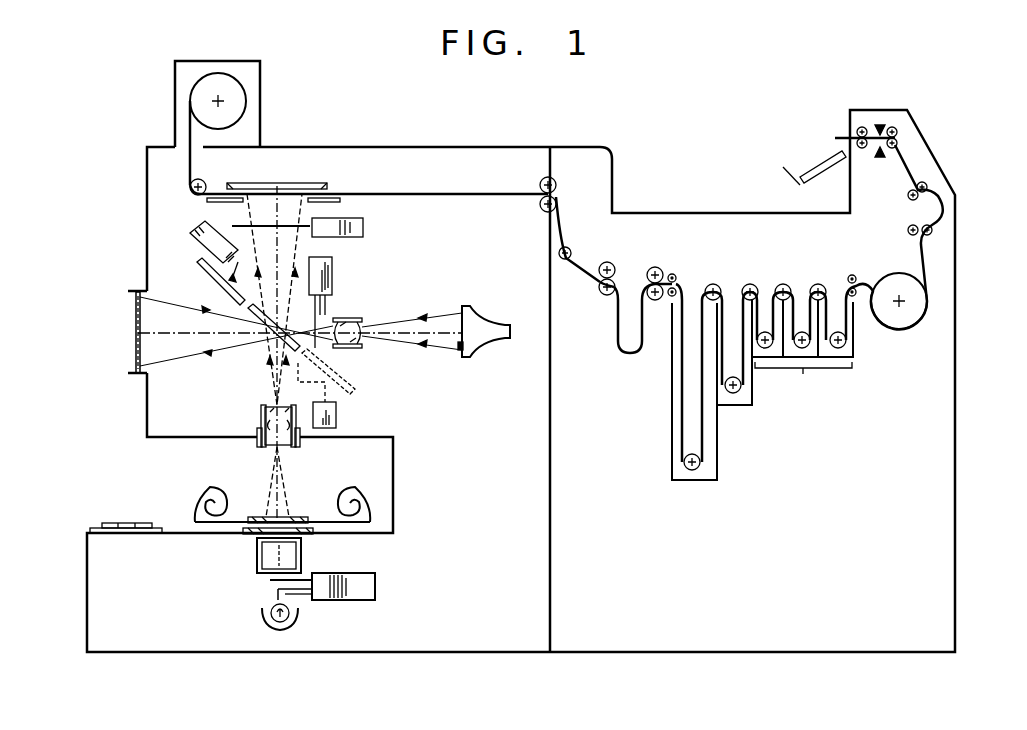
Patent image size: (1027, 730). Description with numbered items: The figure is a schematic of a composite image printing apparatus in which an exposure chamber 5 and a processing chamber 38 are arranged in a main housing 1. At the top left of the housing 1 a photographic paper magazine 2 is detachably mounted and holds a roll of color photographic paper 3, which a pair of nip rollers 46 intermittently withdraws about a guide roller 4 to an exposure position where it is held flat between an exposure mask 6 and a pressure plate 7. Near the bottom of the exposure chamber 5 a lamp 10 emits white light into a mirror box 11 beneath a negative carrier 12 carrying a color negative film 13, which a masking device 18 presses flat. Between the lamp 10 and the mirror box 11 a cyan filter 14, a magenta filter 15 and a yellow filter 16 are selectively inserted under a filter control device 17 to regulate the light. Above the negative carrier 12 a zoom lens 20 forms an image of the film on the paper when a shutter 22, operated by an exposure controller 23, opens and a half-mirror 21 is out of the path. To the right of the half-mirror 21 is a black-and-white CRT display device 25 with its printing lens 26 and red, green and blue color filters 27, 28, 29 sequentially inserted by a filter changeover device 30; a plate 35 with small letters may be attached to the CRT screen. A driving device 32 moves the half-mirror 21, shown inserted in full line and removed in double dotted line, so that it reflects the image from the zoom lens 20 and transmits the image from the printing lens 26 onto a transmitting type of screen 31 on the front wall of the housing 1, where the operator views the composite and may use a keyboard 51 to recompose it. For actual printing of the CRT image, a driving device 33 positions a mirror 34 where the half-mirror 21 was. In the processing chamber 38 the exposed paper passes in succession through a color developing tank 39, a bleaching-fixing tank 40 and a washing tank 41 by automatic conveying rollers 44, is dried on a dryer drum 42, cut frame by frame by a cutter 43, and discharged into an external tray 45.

The main housing 1 is at (87, 546).
The photographic paper magazine 2 is at (175, 82).
The color photographic paper 3 is at (491, 198).
The guide roller 4 is at (206, 182).
The exposure chamber 5 is at (503, 640).
The exposure mask 6 is at (342, 201).
The pressure plate 7 is at (321, 181).
The lamp 10 is at (287, 630).
The mirror box 11 is at (256, 553).
The negative carrier 12 is at (312, 535).
The color negative film 13 is at (372, 505).
The cyan filter 14 is at (303, 596).
The magenta filter 15 is at (276, 590).
The yellow filter 16 is at (268, 578).
The filter control device 17 is at (376, 587).
The masking device 18 is at (255, 515).
The zoom lens 20 is at (258, 415).
The half-mirror 21 is at (262, 330).
The shutter 22 is at (232, 226).
The exposure controller 23 is at (363, 224).
The black-and-white CRT display device 25 is at (476, 345).
The printing lens 26 is at (352, 350).
The red color filter 27 is at (328, 300).
The green color filter 28 is at (326, 308).
The blue color filter 29 is at (326, 313).
The filter changeover device 30 is at (332, 265).
The transmitting type of screen 31 is at (133, 320).
The driving device 32 is at (336, 415).
The driving device 33 is at (200, 240).
The mirror 34 is at (212, 278).
The plate with small letters 35 is at (458, 348).
The processing chamber 38 is at (945, 487).
The color developing tank 39 is at (672, 472).
The bleaching-fixing tank 40 is at (745, 395).
The washing tank 41 is at (802, 353).
The dryer drum 42 is at (900, 330).
The cutter 43 is at (880, 122).
The automatic conveying rollers 44 is at (611, 266).
The external tray 45 is at (795, 178).
The nip rollers 46 is at (560, 200).
The keyboard 51 is at (120, 523).